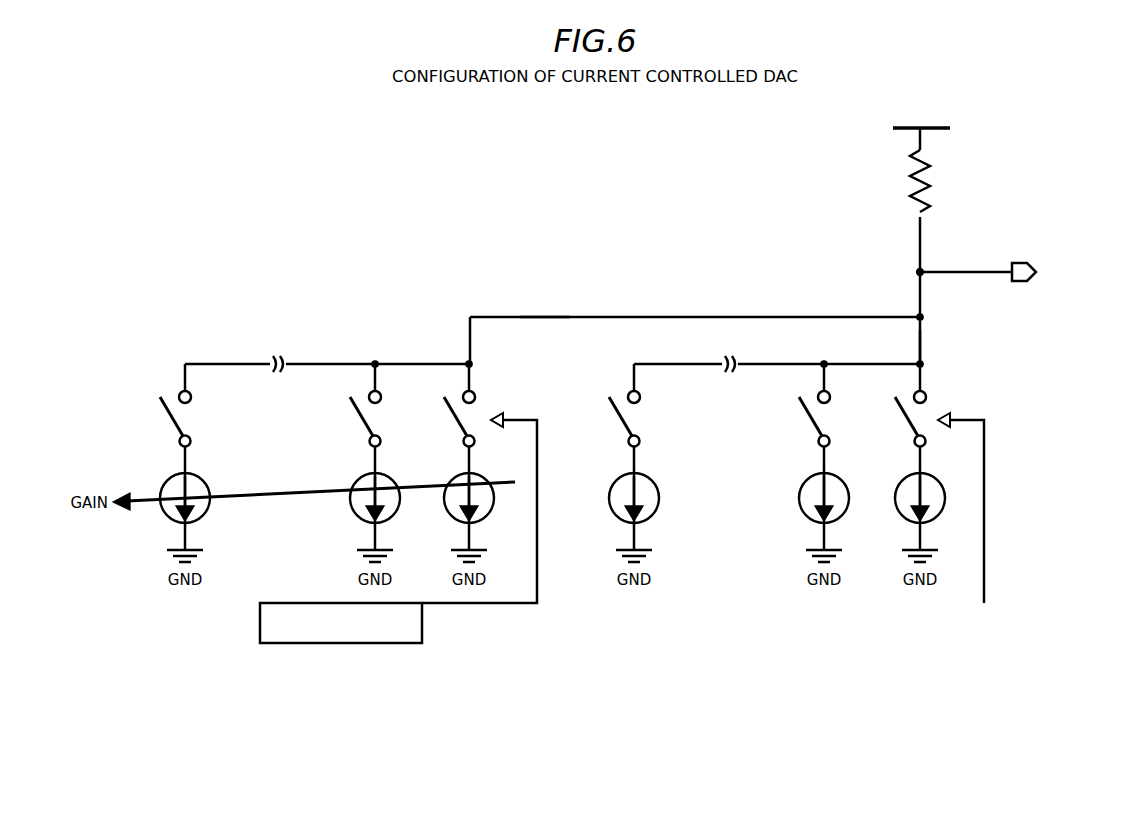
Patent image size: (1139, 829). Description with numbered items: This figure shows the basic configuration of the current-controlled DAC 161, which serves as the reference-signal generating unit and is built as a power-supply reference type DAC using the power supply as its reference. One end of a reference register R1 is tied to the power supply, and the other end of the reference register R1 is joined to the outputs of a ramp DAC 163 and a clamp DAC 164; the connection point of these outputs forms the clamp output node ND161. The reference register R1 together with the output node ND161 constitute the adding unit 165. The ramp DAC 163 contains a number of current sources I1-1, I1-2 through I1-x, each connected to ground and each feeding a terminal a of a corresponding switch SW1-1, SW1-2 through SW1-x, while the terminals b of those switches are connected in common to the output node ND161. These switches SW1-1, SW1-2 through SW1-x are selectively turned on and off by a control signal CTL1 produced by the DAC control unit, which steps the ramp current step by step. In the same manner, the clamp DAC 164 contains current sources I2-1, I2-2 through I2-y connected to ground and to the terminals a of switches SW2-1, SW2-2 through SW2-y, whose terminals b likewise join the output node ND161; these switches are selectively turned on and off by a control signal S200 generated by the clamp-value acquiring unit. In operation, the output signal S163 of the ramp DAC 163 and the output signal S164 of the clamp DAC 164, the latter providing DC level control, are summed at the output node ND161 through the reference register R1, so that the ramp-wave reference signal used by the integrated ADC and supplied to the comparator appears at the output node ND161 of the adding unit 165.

The current-controlled DAC 161 is at (554, 253).
The ramp DAC 163 is at (338, 354).
The clamp DAC 164 is at (784, 350).
The adding unit 165 is at (867, 203).
The reference register R1 is at (935, 181).
The clamp output node ND161 is at (924, 270).
The output signal of the ramp DAC S163 is at (542, 316).
The output signal of the clamp DAC S164 is at (922, 344).
The control signal S200 is at (986, 500).
The control signal CTL1 is at (478, 606).
The switch SW1-x is at (165, 422).
The switch SW1-2 is at (320, 422).
The switch SW1-1 is at (449, 422).
The switch SW2-y is at (614, 422).
The switch SW2-2 is at (774, 419).
The switch SW2-1 is at (900, 422).
The current source I1-x is at (168, 515).
The current source I1-2 is at (358, 515).
The current source I1-1 is at (452, 515).
The current source I2-y is at (617, 515).
The current source I2-2 is at (807, 515).
The current source I2-1 is at (903, 515).
The switch terminal a is at (189, 445).
The switch terminal b is at (191, 397).